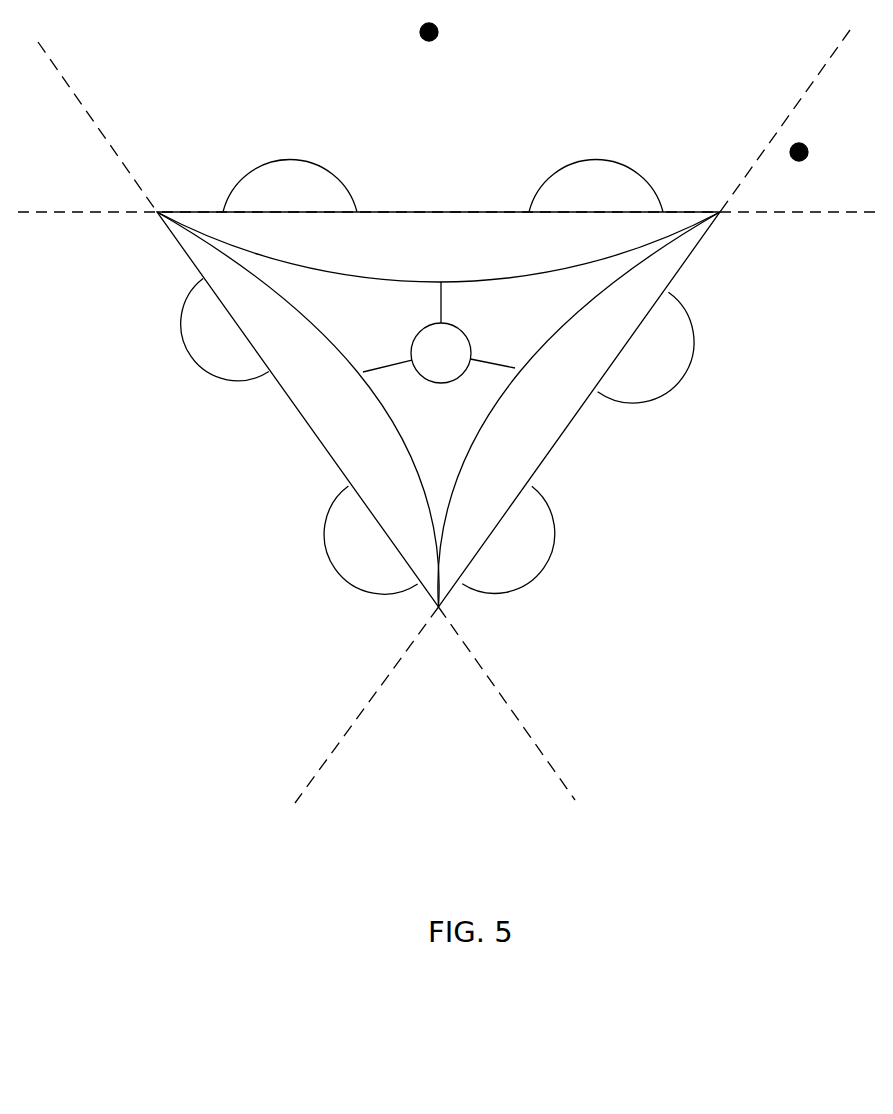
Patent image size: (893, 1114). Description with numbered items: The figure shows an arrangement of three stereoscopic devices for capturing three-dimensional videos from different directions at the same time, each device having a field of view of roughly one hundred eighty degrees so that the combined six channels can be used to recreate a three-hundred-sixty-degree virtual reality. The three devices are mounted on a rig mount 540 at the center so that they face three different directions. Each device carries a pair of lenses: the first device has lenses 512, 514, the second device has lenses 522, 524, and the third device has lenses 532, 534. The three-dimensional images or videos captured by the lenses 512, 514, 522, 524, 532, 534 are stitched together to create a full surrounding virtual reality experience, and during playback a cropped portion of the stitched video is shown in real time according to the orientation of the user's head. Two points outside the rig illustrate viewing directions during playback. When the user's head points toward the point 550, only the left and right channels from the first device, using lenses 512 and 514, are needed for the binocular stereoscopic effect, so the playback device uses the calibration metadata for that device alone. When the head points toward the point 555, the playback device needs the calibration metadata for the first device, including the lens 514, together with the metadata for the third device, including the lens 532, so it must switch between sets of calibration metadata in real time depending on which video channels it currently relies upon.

The lens 512 is at (290, 185).
The lens 514 is at (596, 185).
The lens 522 is at (225, 330).
The lens 524 is at (370, 540).
The lens 532 is at (646, 347).
The lens 534 is at (508, 539).
The 360 rig mount 540 is at (439, 332).
The first reference point 550 is at (455, 34).
The point 555 is at (825, 155).